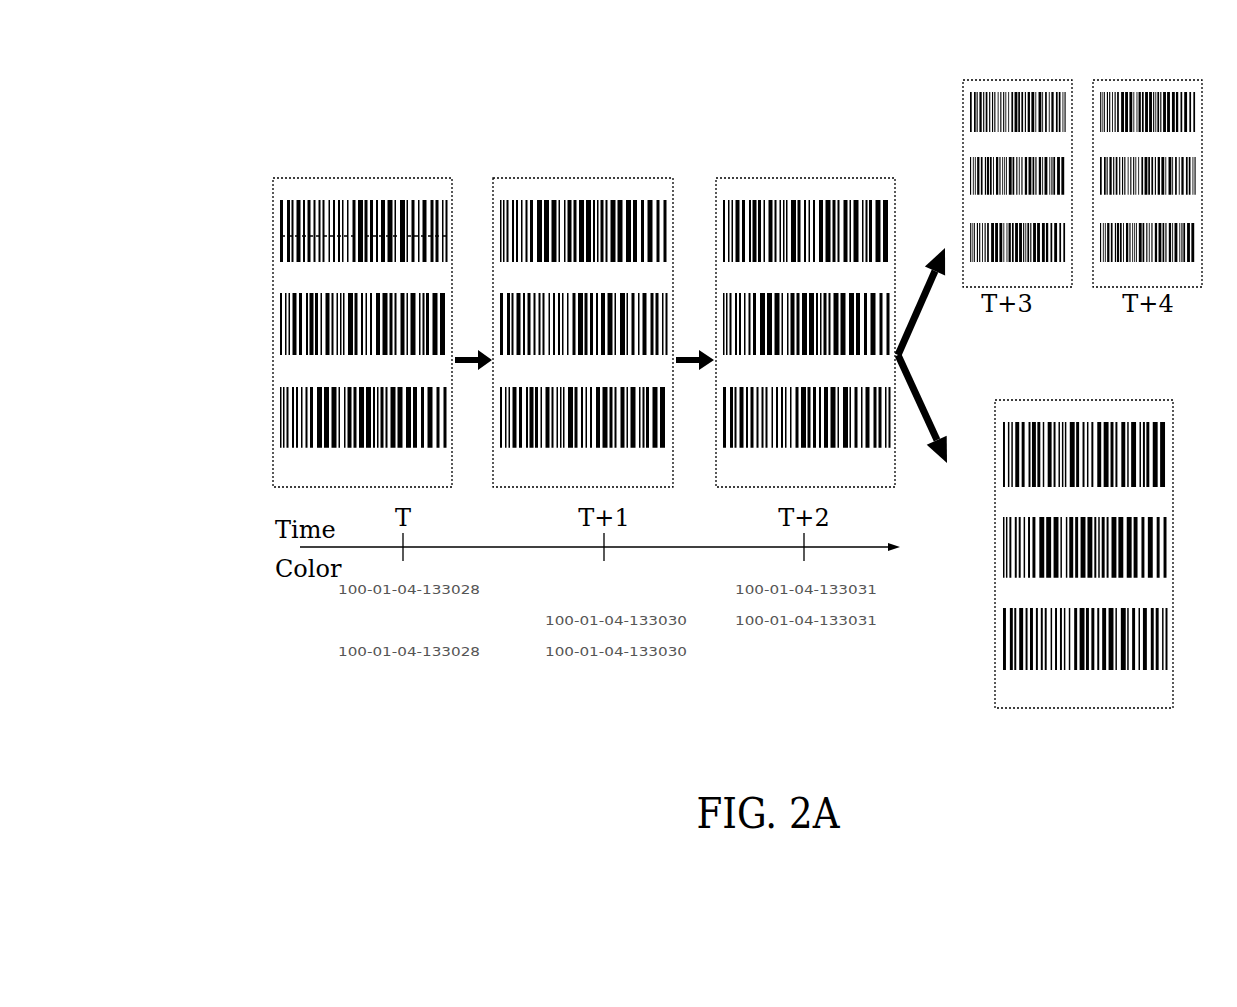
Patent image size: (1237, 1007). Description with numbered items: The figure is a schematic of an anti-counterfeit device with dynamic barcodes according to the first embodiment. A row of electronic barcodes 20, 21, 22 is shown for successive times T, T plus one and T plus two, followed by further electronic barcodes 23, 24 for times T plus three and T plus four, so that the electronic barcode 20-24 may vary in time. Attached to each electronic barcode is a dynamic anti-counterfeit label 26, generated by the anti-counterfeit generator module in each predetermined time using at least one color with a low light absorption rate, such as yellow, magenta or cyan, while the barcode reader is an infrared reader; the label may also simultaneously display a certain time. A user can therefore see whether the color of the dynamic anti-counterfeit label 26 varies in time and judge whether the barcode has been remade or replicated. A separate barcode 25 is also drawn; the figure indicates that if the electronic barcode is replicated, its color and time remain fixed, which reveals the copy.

The electronic barcode 20 is at (324, 311).
The electronic barcode 21 is at (570, 178).
The electronic barcode 22 is at (790, 178).
The electronic barcode 23 is at (990, 80).
The electronic barcode 24 is at (1140, 80).
The barcode label branch at later time 25 is at (1068, 400).
The dynamic anti-counterfeit label 26 is at (282, 236).